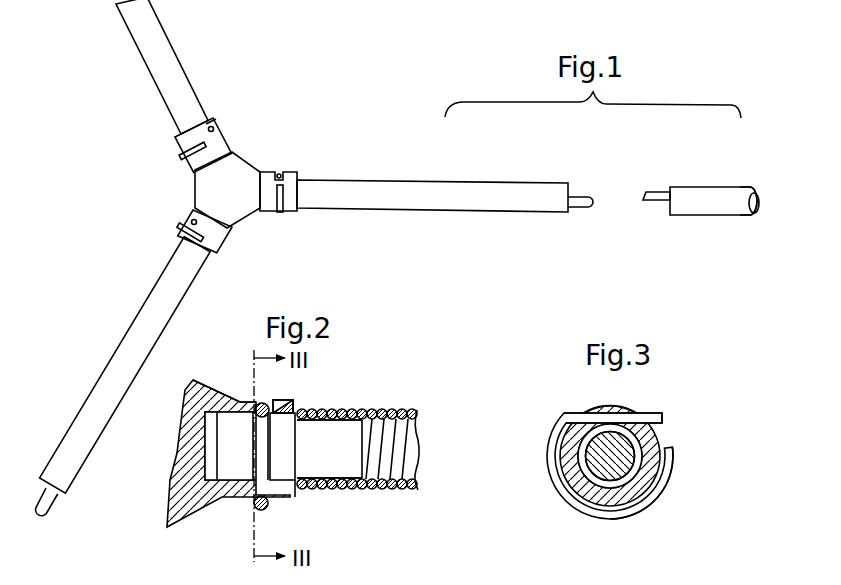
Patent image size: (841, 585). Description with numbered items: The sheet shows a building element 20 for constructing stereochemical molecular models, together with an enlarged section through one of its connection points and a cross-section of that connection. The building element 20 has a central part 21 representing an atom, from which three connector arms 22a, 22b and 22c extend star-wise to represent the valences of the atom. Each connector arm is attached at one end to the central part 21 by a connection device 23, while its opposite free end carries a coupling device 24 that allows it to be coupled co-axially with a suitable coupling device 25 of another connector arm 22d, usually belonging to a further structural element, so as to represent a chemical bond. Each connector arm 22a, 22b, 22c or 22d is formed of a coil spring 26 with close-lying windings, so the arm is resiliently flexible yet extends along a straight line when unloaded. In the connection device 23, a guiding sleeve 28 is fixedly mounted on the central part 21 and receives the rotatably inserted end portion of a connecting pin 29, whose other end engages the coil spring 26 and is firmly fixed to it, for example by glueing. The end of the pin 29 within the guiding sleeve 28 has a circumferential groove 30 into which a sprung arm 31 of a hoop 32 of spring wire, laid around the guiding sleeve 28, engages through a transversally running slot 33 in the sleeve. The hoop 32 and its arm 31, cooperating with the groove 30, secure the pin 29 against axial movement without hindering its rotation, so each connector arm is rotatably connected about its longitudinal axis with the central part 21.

In FIG. 1, the building element 20 is at (257, 152).
In FIG. 1, the central part 21 is at (205, 188).
In FIG. 2, the central part 21 is at (180, 473).
In FIG. 1, the connector arm 22a is at (439, 191).
In FIG. 2, the connector arm 22a is at (387, 409).
In FIG. 1, the connector arm 22b is at (143, 315).
In FIG. 1, the connector arm 22c is at (137, 42).
In FIG. 1, the other connector arm 22d is at (697, 195).
In FIG. 1, the connection device 23 is at (304, 163).
In FIG. 2, the connection device 23 is at (208, 518).
In FIG. 3, the connection device 23 is at (680, 482).
In FIG. 1, the coupling device 24 is at (584, 200).
In FIG. 1, the connector 25 is at (748, 183).
In FIG. 2, the coil spring 26 is at (386, 490).
In FIG. 2, the guiding sleeve 28 is at (232, 396).
In FIG. 3, the guiding sleeve 28 is at (628, 490).
In FIG. 2, the connecting pin 29 is at (288, 462).
In FIG. 3, the connecting pin 29 is at (602, 458).
In FIG. 2, the circumferential groove 30 is at (262, 447).
In FIG. 3, the circumferential groove 30 is at (641, 444).
In FIG. 2, the sprung arm 31 is at (258, 403).
In FIG. 3, the sprung arm 31 is at (663, 416).
In FIG. 2, the hoop 32 is at (254, 505).
In FIG. 3, the hoop 32 is at (591, 508).
In FIG. 2, the slot 33 is at (270, 403).
In FIG. 3, the slot 33 is at (609, 408).